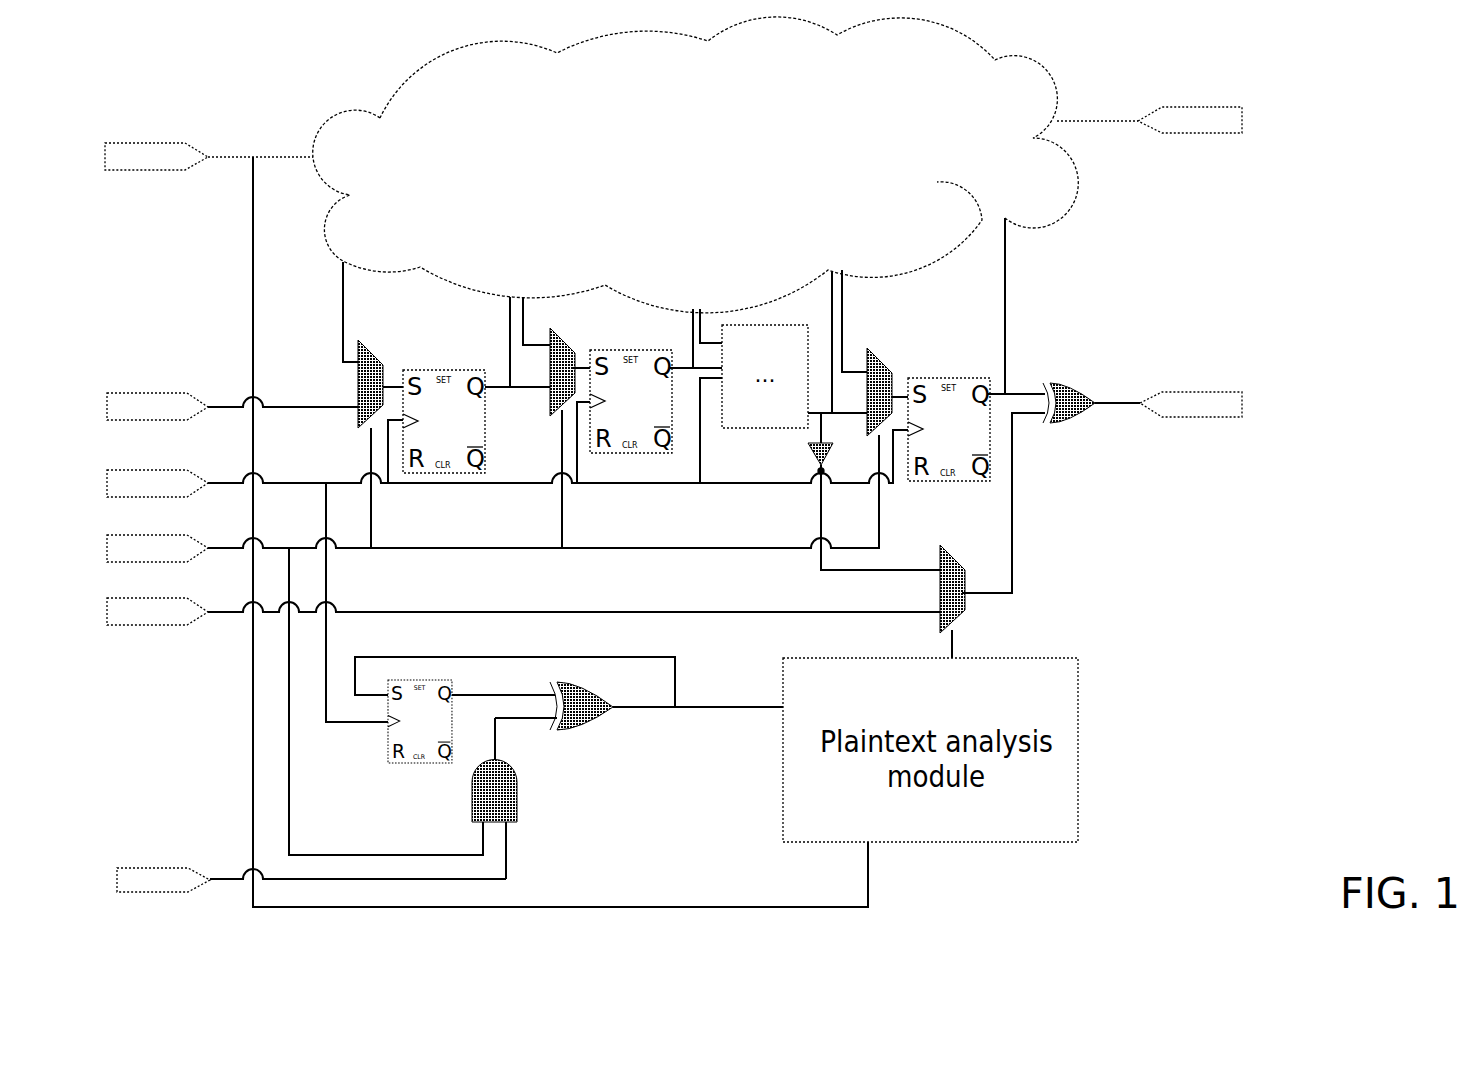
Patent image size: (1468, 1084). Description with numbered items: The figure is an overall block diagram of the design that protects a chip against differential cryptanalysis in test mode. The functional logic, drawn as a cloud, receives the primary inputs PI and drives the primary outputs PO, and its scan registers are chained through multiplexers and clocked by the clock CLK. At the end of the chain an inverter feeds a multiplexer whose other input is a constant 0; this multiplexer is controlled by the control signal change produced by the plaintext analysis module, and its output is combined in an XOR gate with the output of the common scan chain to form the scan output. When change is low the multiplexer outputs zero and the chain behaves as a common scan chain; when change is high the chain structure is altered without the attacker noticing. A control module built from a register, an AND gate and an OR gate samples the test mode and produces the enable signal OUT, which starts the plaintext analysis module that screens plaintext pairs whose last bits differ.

The primary input bus PI[0:127] PI is at (485, 512).
The primary output bus PO[0:127] PO is at (1152, 102).
The clock input CLK is at (507, 550).
The constant 0 is at (510, 598).
The change signal change is at (993, 535).
The OUT signal OUT is at (698, 691).